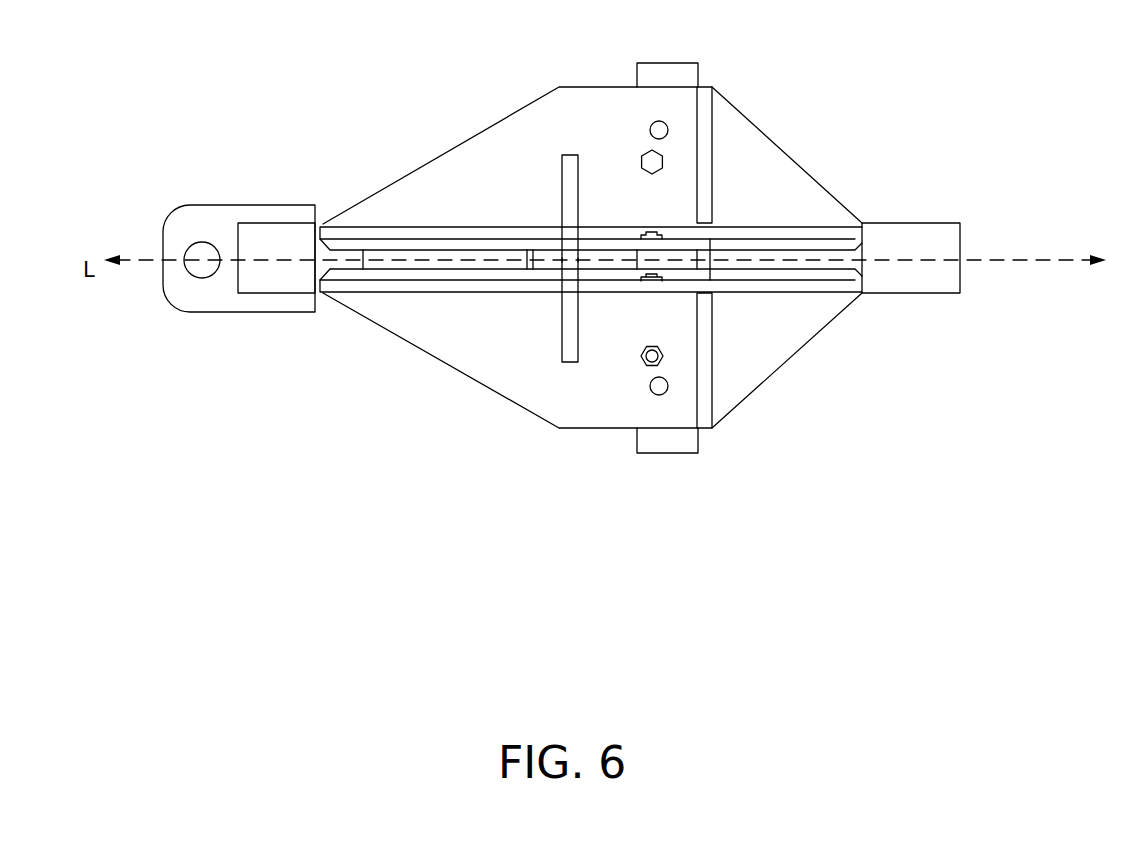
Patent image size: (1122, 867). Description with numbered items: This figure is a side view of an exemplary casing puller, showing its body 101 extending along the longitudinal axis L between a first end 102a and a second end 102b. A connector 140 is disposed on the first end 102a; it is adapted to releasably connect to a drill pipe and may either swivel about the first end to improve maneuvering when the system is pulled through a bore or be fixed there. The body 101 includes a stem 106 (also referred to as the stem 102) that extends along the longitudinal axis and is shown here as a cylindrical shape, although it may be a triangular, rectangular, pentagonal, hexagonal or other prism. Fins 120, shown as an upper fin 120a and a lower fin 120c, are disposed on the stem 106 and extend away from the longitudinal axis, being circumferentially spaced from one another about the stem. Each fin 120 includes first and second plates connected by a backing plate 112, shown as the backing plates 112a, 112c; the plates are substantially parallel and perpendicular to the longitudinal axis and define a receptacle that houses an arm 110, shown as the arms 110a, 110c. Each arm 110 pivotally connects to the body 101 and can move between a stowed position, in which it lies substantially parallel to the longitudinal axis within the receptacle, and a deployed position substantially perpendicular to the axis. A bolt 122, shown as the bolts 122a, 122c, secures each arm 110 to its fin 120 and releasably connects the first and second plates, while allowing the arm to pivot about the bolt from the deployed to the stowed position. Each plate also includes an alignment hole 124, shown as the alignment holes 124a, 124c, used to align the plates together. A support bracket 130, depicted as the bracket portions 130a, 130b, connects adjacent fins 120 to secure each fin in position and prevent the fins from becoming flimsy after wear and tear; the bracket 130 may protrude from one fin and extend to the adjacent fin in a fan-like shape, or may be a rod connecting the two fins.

The body 101 is at (323, 222).
The stem 102 is at (570, 271).
The first end 102a is at (205, 295).
The second end 102b is at (920, 253).
The stem 106 is at (865, 270).
The arm 110 is at (758, 262).
The arm 110a is at (698, 76).
The arm 110c is at (698, 437).
The backing plate 112 is at (795, 257).
The backing plate 112a is at (705, 140).
The backing plate 112c is at (703, 413).
The fin 120 is at (570, 257).
The fin 120a is at (479, 172).
The fin 120c is at (463, 345).
The bolt 122 is at (540, 256).
The bolt 122a is at (650, 131).
The bolt 122c is at (650, 390).
The alignment hole 124 is at (521, 224).
The alignment hole 124a is at (642, 157).
The alignment hole 124c is at (641, 363).
The support bracket 130 is at (501, 258).
The support bracket 130a is at (562, 200).
The support bracket 130b is at (562, 318).
The connector 140 is at (195, 262).